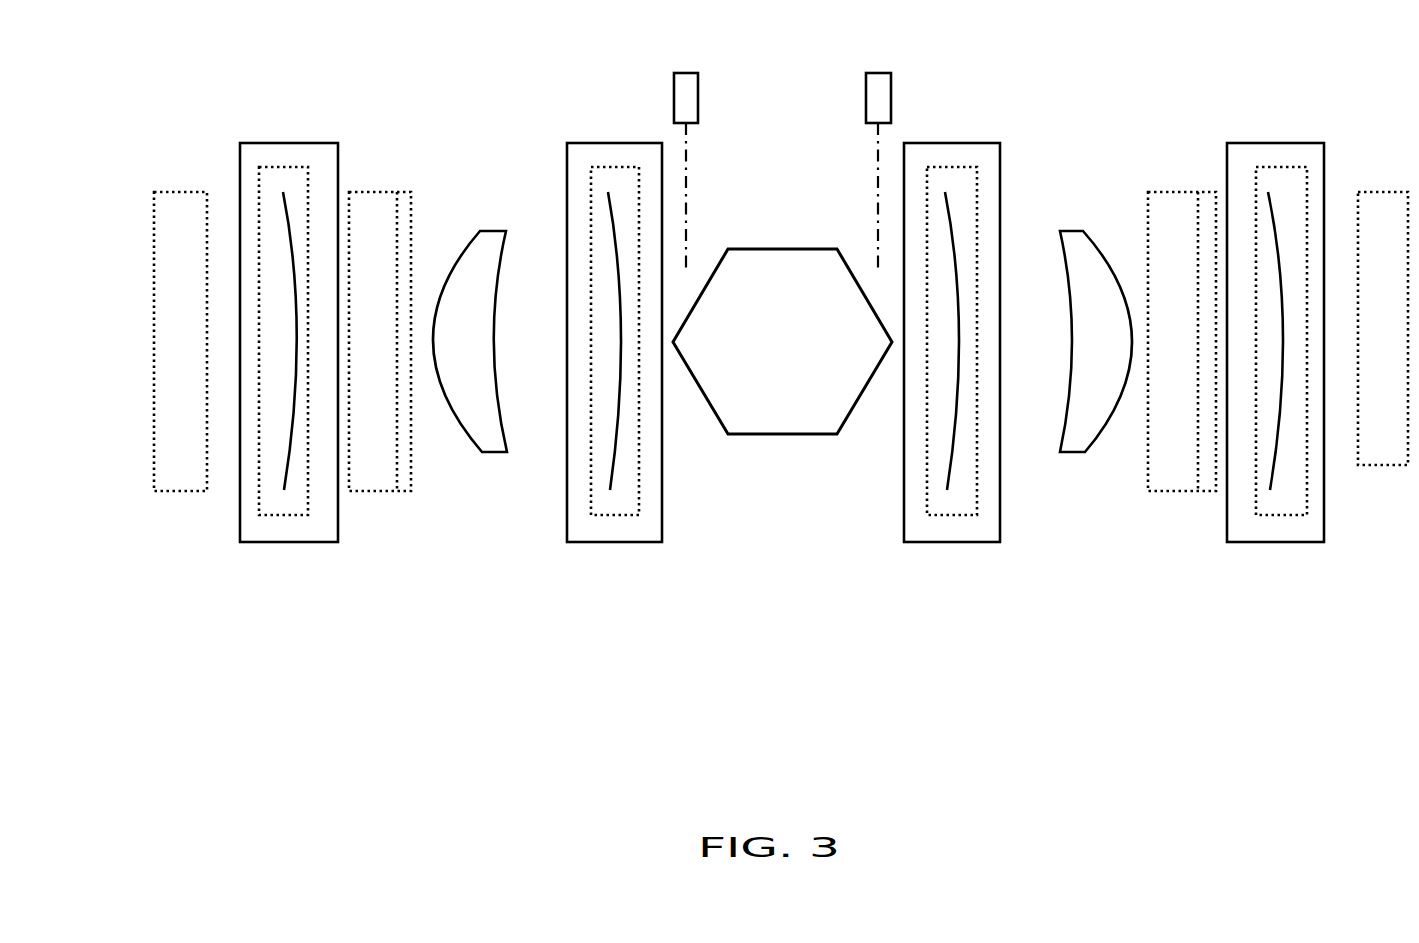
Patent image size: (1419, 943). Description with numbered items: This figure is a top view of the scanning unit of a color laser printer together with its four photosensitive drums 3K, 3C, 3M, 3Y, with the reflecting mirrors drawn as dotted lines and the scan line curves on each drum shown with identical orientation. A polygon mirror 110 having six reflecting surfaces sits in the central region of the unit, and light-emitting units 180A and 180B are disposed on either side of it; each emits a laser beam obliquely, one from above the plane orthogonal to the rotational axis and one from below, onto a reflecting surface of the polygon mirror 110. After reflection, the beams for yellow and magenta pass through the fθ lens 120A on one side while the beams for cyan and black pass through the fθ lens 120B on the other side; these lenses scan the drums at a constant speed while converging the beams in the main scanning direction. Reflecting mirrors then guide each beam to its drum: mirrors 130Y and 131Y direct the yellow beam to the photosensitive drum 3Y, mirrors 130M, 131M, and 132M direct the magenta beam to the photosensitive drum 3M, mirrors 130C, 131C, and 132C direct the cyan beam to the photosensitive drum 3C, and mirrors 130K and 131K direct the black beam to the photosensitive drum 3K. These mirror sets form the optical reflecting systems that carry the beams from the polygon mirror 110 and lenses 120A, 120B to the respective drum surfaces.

The photosensitive drum 3K is at (290, 143).
The photosensitive drum 3C is at (645, 143).
The photosensitive drum 3M is at (952, 143).
The photosensitive drum 3Y is at (1250, 143).
The reflecting mirror 130K is at (189, 485).
The reflecting mirror 130C is at (407, 455).
The reflecting mirror 130M is at (1212, 477).
The reflecting mirror 130Y is at (1388, 210).
The reflecting mirror 131K is at (288, 510).
The reflecting mirror 131C is at (381, 478).
The reflecting mirror 131M is at (1160, 480).
The reflecting mirror 131Y is at (1288, 502).
The reflecting mirror 132C is at (629, 510).
The reflecting mirror 132M is at (953, 510).
The fθ lens 120A is at (1077, 242).
The fθ lens 120B is at (494, 242).
The polygon mirror 110 is at (758, 250).
The light-emitting unit 180A is at (891, 87).
The light-emitting unit 180B is at (698, 87).